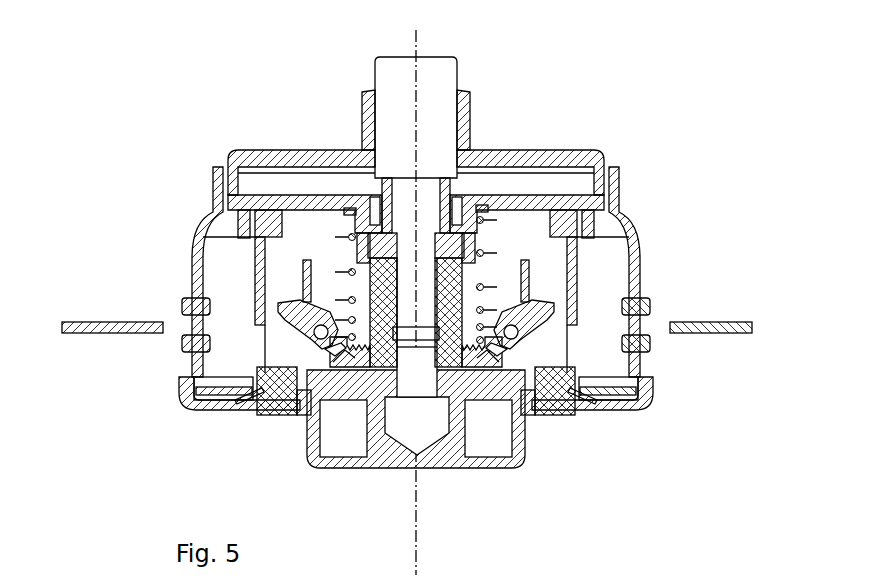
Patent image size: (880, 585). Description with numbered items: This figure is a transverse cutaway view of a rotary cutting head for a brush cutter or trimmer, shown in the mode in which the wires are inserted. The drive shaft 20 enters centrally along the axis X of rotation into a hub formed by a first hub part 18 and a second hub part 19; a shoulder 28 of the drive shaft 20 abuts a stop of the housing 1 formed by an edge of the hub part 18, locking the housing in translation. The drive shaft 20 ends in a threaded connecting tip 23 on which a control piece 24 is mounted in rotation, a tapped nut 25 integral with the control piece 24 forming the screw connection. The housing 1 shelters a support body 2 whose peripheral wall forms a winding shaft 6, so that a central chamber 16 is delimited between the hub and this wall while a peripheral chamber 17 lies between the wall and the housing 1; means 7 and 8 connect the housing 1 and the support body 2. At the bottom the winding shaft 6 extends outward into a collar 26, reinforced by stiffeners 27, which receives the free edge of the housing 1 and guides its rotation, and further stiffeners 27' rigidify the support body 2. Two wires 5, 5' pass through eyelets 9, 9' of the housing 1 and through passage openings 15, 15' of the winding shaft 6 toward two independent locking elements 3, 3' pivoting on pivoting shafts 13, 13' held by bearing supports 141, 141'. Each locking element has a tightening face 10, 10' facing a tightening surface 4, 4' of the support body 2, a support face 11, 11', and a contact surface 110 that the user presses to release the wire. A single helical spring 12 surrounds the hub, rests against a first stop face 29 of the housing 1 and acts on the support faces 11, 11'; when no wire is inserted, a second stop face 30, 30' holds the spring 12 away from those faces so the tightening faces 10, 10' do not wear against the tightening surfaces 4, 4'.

The axis of rotation X is at (418, 90).
The housing 1 is at (635, 220).
The support body 2 is at (658, 400).
The locking element 3 is at (298, 201).
The locking element 3' is at (545, 198).
The tightening surface 4 is at (332, 439).
The tightening surface 4' is at (502, 431).
The wire 5 is at (112, 354).
The wire 5' is at (711, 303).
The winding shaft 6 is at (258, 283).
The connection means 7 is at (449, 243).
The connection means 8 is at (413, 385).
The opening 9 is at (141, 317).
The opening 9' is at (668, 329).
The tightening face 10 is at (296, 425).
The tightening face 10' is at (534, 427).
The support face 11 is at (322, 426).
The support face 11' is at (482, 417).
The elastic element 12 is at (358, 240).
The pivoting shaft 13 is at (288, 390).
The pivoting shaft 13' is at (562, 389).
The passage opening 15 is at (201, 381).
The passage opening 15' is at (627, 380).
The central chamber 16 is at (265, 268).
The peripheral chamber 17 is at (213, 273).
The hub part 18 is at (447, 195).
The hub part 19 is at (388, 313).
The drive shaft 20 is at (447, 73).
The connecting tip 23 is at (400, 330).
The control piece 24 is at (440, 445).
The nut 25 is at (440, 428).
The collar 26 is at (192, 393).
The stiffener 27 is at (233, 430).
The stiffener 27' is at (637, 316).
The shoulder 28 is at (366, 90).
The first stop face 29 is at (351, 208).
The second stop face 30 is at (317, 202).
The second stop face 30' is at (504, 230).
The contact surface 110 is at (305, 262).
The bearing support 141 is at (203, 430).
The bearing support 141' is at (629, 404).